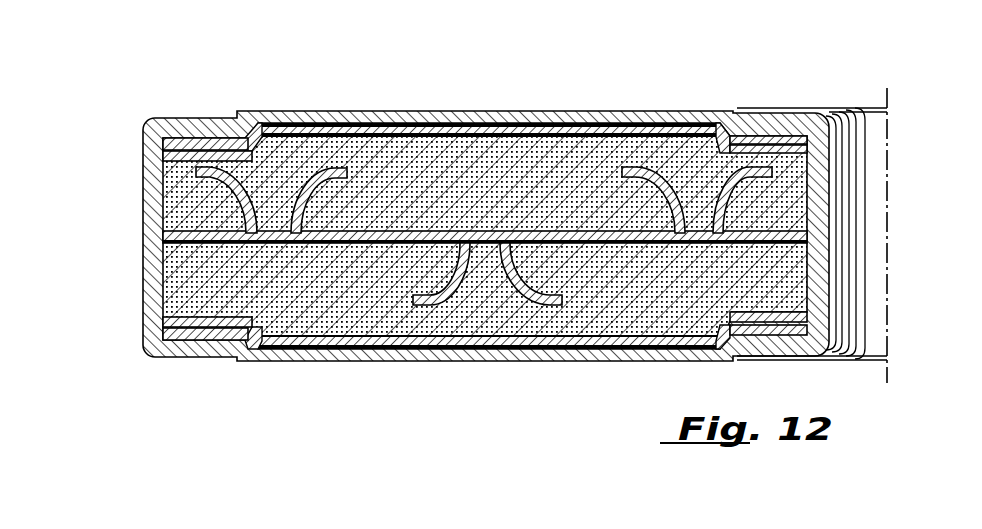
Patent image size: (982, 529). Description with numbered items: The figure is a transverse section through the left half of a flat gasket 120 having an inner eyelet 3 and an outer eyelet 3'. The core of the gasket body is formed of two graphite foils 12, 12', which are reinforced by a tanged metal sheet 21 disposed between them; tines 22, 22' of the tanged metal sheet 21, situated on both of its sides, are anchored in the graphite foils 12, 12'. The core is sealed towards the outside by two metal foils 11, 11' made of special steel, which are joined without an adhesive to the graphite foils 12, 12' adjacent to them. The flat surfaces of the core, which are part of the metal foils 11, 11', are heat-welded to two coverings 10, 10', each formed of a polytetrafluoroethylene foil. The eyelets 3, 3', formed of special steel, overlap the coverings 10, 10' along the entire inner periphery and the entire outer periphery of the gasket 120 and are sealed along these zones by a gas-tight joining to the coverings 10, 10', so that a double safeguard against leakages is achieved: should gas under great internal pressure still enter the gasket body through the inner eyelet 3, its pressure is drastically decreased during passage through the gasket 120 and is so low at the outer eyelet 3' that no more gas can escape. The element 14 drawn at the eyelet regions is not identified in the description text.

The flat gasket 120 is at (341, 79).
The inner eyelet 3 is at (781, 200).
The outer eyelet 3' is at (165, 203).
The covering 10 is at (487, 99).
The covering 10' is at (487, 372).
The metal foil 11 is at (489, 91).
The metal foil 11' is at (489, 377).
The graphite foil 12 is at (128, 188).
The graphite foil 12' is at (128, 290).
The insert 14 is at (212, 117).
The tanged metal sheet 21 is at (586, 258).
The tines 22 is at (484, 148).
The tines 22' is at (505, 331).